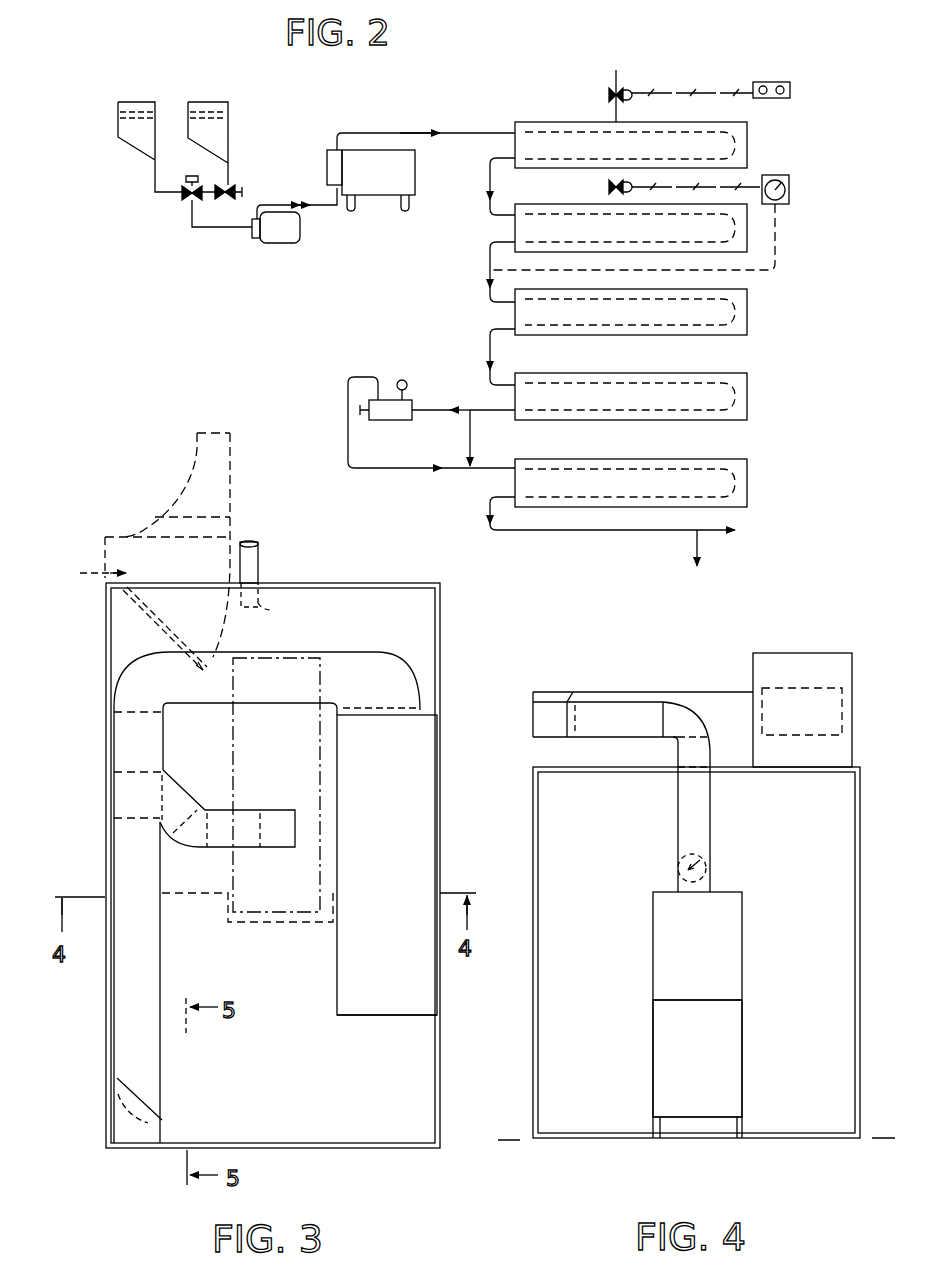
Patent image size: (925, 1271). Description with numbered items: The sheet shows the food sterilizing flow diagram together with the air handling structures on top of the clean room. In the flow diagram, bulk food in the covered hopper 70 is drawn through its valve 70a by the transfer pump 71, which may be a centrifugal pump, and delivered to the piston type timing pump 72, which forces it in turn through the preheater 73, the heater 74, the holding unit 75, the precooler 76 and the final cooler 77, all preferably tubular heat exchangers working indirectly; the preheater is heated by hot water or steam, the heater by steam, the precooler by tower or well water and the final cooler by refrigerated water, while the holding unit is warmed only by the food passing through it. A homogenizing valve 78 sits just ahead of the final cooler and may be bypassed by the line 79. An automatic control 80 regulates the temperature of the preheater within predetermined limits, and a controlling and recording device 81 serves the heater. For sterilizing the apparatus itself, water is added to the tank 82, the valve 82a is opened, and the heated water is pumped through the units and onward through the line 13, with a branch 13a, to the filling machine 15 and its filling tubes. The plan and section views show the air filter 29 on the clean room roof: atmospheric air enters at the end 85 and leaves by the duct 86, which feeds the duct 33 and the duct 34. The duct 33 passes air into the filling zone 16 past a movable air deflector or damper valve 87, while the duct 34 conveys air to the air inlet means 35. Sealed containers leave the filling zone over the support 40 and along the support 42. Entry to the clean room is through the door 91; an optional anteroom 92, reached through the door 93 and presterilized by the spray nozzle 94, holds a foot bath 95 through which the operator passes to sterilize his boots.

In FIG. 2, the line 13 is at (537, 530).
In FIG. 2, the branch outlet line 13a is at (697, 543).
In FIG. 3, the filling machine 15 is at (280, 915).
In FIG. 4, the filling machine 15 is at (697, 1058).
In FIG. 4, the filling zone 16 is at (653, 950).
In FIG. 3, the air filter 29 is at (387, 865).
In FIG. 4, the air filter 29 is at (753, 665).
In FIG. 3, the duct 33 is at (208, 808).
In FIG. 4, the duct 33 is at (712, 819).
In FIG. 3, the duct 34 is at (163, 952).
In FIG. 3, the air inlet means 35 is at (108, 1114).
In FIG. 3, the support 40 is at (274, 614).
In FIG. 3, the support 42 is at (261, 573).
In FIG. 2, the covered hopper 70 is at (125, 152).
In FIG. 2, the hopper valve 70a is at (184, 178).
In FIG. 2, the transfer pump 71 is at (255, 238).
In FIG. 2, the piston type timing pump 72 is at (327, 172).
In FIG. 2, the preheater 73 is at (750, 146).
In FIG. 2, the heater 74 is at (750, 235).
In FIG. 2, the holding unit 75 is at (750, 310).
In FIG. 2, the precooler 76 is at (750, 388).
In FIG. 2, the final cooler 77 is at (750, 481).
In FIG. 2, the homogenizing valve 78 is at (388, 400).
In FIG. 2, the bypass line 79 is at (470, 432).
In FIG. 2, the automatic control 80 is at (805, 95).
In FIG. 2, the controlling and recording device 81 is at (795, 189).
In FIG. 2, the tank 82 is at (230, 138).
In FIG. 2, the valve 82a is at (236, 190).
In FIG. 3, the end 85 is at (400, 1018).
In FIG. 3, the duct 86 is at (381, 652).
In FIG. 4, the duct 86 is at (676, 692).
In FIG. 4, the movable air deflector or damper valve 87 is at (712, 871).
In FIG. 3, the door 91 is at (158, 628).
In FIG. 3, the anteroom 92 is at (100, 550).
In FIG. 3, the door 93 is at (190, 430).
In FIG. 3, the spray nozzle 94 is at (83, 584).
In FIG. 3, the foot bath 95 is at (215, 526).